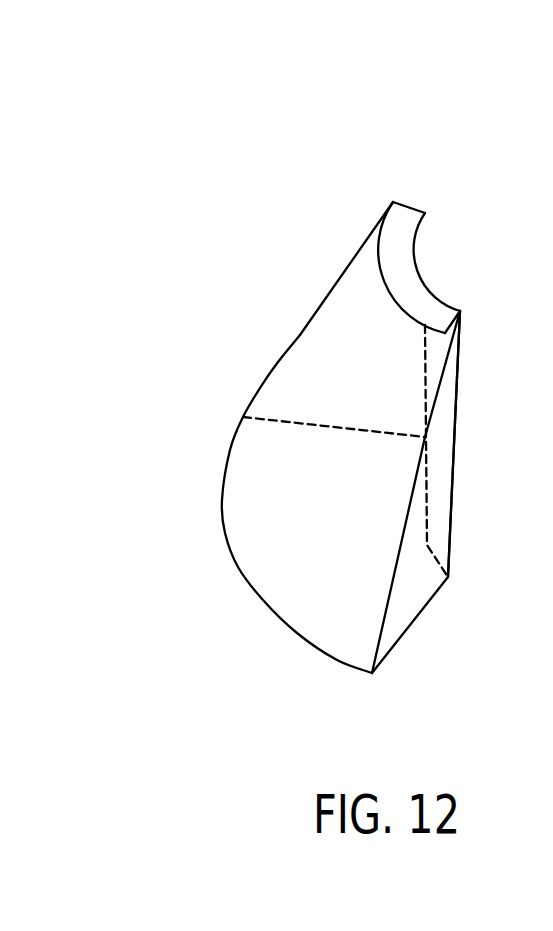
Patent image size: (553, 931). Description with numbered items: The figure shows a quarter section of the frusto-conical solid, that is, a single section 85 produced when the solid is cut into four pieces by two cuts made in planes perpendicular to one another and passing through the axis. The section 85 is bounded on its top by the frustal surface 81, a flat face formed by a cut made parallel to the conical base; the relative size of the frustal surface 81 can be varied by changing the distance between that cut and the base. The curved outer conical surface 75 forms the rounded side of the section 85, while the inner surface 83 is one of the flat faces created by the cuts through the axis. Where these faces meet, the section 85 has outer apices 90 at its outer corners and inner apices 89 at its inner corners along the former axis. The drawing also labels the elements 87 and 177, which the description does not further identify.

The section 85 is at (339, 404).
The frustal surface 81 is at (387, 242).
The inner surface 83 is at (417, 246).
The outer conical surface 75 is at (317, 372).
The outer apices 90 is at (220, 418).
The inner apices 89 is at (443, 438).
The side face 87 is at (413, 557).
The bottom edge 177 is at (395, 622).